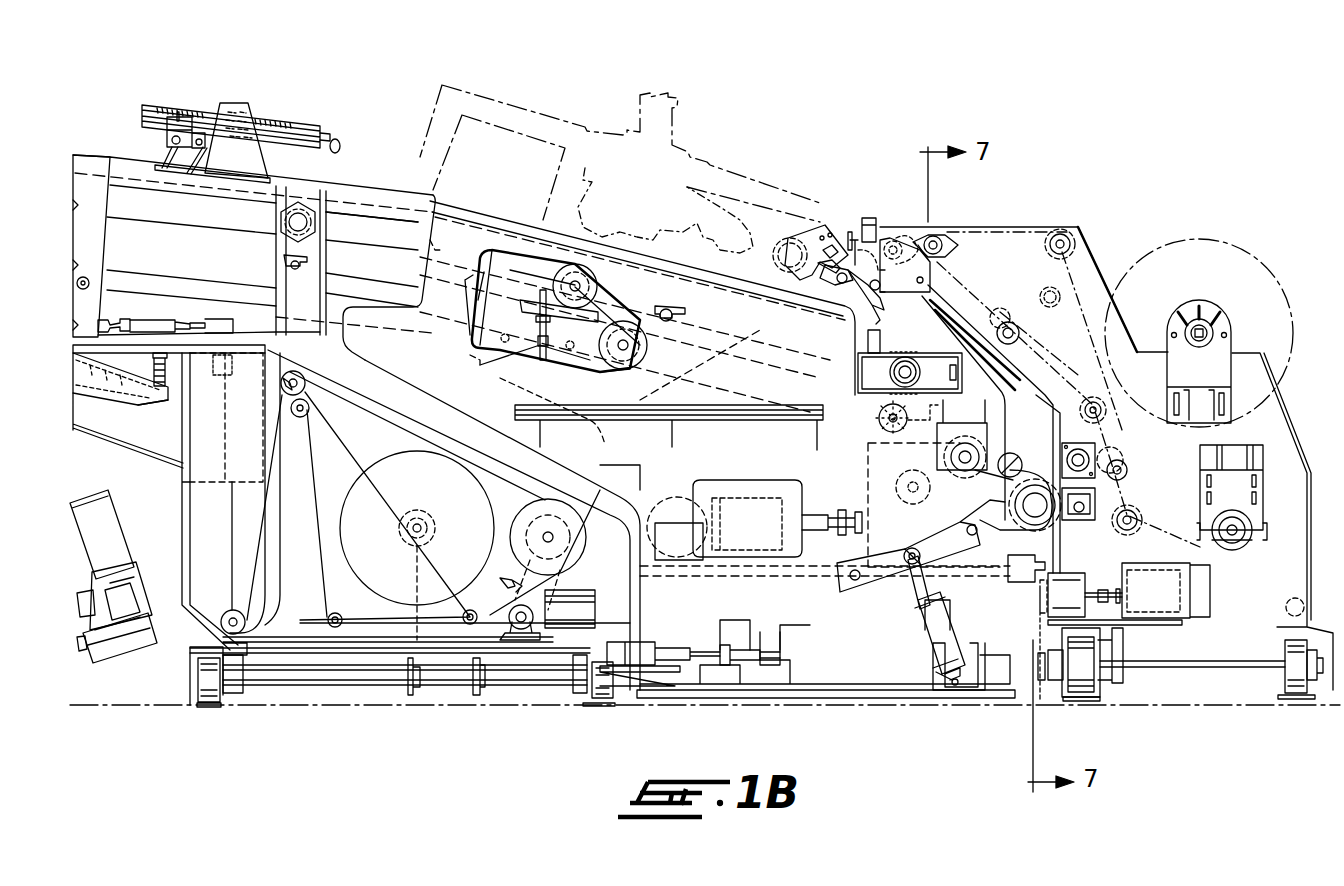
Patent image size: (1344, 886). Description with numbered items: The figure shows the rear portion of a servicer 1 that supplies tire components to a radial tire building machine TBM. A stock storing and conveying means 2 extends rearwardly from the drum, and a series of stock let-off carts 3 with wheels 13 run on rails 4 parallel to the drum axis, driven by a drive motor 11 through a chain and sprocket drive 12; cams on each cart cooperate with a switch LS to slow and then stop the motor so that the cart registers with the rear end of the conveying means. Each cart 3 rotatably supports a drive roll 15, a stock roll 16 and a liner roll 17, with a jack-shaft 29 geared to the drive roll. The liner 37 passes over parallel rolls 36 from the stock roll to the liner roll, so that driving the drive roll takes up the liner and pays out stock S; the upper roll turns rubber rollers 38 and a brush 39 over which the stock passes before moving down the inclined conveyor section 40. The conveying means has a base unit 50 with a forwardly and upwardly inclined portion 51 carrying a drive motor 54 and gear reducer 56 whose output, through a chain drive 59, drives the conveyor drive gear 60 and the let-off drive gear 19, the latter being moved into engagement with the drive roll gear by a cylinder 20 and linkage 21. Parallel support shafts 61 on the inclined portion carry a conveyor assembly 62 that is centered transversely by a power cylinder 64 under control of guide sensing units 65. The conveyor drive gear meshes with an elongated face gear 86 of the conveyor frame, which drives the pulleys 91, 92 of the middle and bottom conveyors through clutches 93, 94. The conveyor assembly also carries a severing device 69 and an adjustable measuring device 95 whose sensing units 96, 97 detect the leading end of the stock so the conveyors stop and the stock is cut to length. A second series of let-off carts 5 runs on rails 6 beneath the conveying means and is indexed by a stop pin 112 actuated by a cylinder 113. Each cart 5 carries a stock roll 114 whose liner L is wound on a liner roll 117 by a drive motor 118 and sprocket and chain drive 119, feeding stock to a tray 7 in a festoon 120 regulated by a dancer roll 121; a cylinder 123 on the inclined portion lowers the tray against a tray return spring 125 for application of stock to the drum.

The servicer 1 is at (762, 165).
The stock storing and conveying means 2 is at (352, 190).
The stock let-off units or carts 3 is at (1292, 400).
The rails 4 is at (1082, 700).
The stock let-off units or carts 5 is at (180, 536).
The rails 6 is at (208, 706).
The stock tray 7 is at (70, 376).
The drive motor 11 is at (1202, 602).
The chain and sprocket drive 12 is at (1037, 620).
The wheels 13 is at (1280, 650).
The drive roll 15 is at (1118, 500).
The stock roll 16 is at (1248, 252).
The liner roll 17 is at (1238, 548).
The let-off drive gear 19 is at (1050, 525).
The cylinder 20 is at (922, 630).
The linkage 21 is at (880, 578).
The jack-shaft 29 is at (1075, 450).
The rolls 36 is at (937, 240).
The liner 37 is at (1070, 365).
The rubber rollers 38 is at (945, 256).
The brush 39 is at (896, 235).
The inclined conveyor section 40 is at (872, 278).
The base unit 50 is at (848, 688).
The forwardly and upwardly inclined portion 51 is at (92, 160).
The drive motor 54 is at (765, 490).
The gear reducer 56 is at (866, 466).
The chain drive 59 is at (1018, 466).
The conveyor drive gear 60 is at (878, 420).
The support shafts 61 is at (282, 272).
The conveyor assembly 62 is at (357, 250).
The power cylinder 64 is at (305, 203).
The guide sensing units 65 is at (838, 252).
The severing device 69 is at (698, 152).
The elongated face gear 86 is at (912, 352).
The pulley 91 is at (600, 280).
The pulley 92 is at (647, 345).
The clutch 93 is at (600, 293).
The clutch 94 is at (638, 380).
The adjustable measuring device 95 is at (272, 118).
The sensing unit 96 is at (200, 170).
The sensing unit 97 is at (165, 153).
The stop pin 112 is at (615, 642).
The cylinder 113 is at (740, 655).
The stock roll 114 is at (382, 458).
The liner roll 117 is at (560, 478).
The drive motor 118 is at (592, 590).
The sprocket and chain drive 119 is at (544, 609).
The festoon 120 is at (280, 530).
The dancer roll 121 is at (243, 612).
The cylinder 123 is at (157, 325).
The tray return spring 125 is at (167, 375).
The liner L is at (326, 538).
The stock S is at (878, 232).
The switch LS is at (1020, 582).
The tire building machine TBM is at (122, 658).